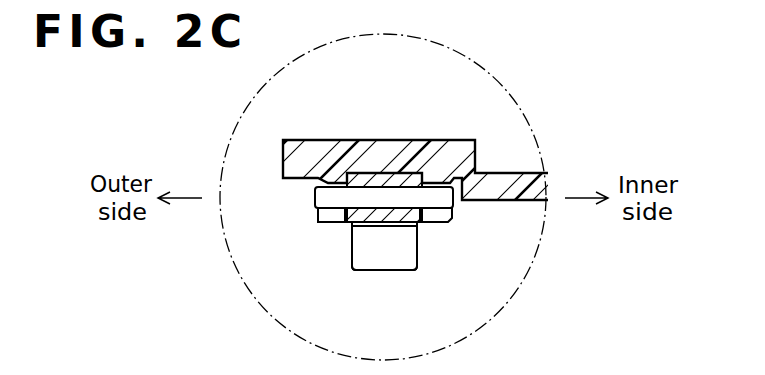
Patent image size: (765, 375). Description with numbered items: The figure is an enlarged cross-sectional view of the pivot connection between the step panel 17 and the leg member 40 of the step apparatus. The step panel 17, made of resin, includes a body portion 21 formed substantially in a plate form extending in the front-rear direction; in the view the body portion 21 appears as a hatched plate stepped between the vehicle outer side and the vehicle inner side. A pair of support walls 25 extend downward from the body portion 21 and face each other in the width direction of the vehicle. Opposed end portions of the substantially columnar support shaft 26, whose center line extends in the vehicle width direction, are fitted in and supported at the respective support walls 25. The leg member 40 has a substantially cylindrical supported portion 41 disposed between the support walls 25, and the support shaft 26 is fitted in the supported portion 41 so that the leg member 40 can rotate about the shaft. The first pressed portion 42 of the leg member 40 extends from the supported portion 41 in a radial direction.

The step panel 17 is at (523, 168).
The body portion 21 is at (503, 176).
The support walls 25 is at (322, 222).
The support shaft 26 is at (340, 192).
The leg member 40 is at (352, 249).
The supported portion 41 is at (404, 186).
The first pressed portion 42 is at (410, 248).